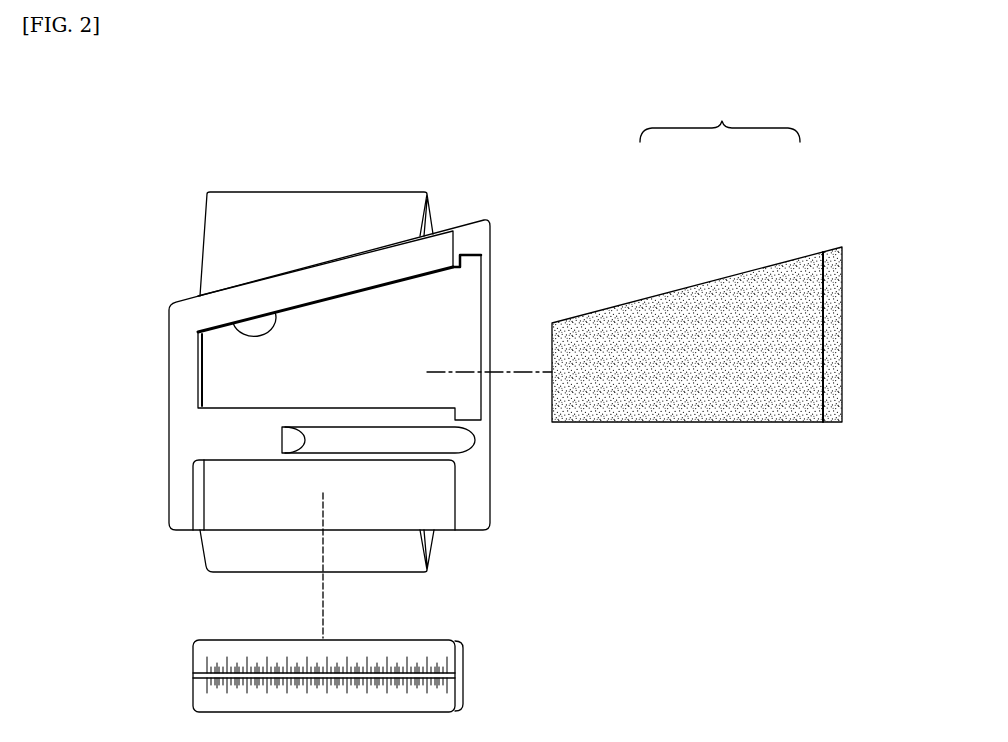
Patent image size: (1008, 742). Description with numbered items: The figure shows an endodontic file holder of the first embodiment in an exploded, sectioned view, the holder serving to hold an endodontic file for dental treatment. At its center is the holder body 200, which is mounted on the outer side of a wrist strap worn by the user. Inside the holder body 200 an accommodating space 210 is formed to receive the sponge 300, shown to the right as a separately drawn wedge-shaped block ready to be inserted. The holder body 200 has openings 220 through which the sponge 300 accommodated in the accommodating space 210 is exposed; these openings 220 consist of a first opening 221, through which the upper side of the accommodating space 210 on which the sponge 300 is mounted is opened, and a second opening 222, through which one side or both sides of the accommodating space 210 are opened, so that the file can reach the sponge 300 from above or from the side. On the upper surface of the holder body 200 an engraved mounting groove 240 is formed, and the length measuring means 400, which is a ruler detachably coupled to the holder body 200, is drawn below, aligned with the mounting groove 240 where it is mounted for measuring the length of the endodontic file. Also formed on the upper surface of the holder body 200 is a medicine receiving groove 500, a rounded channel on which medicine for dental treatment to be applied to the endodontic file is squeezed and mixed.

The holder body 200 is at (169, 372).
The accommodating space 210 is at (356, 331).
The openings 220 is at (720, 119).
The first opening 221 is at (233, 323).
The second opening 222 is at (473, 282).
The mounting groove 240 is at (227, 497).
The sponge 300 is at (836, 340).
The length measuring means 400 is at (193, 658).
The medicine receiving groove 500 is at (455, 438).